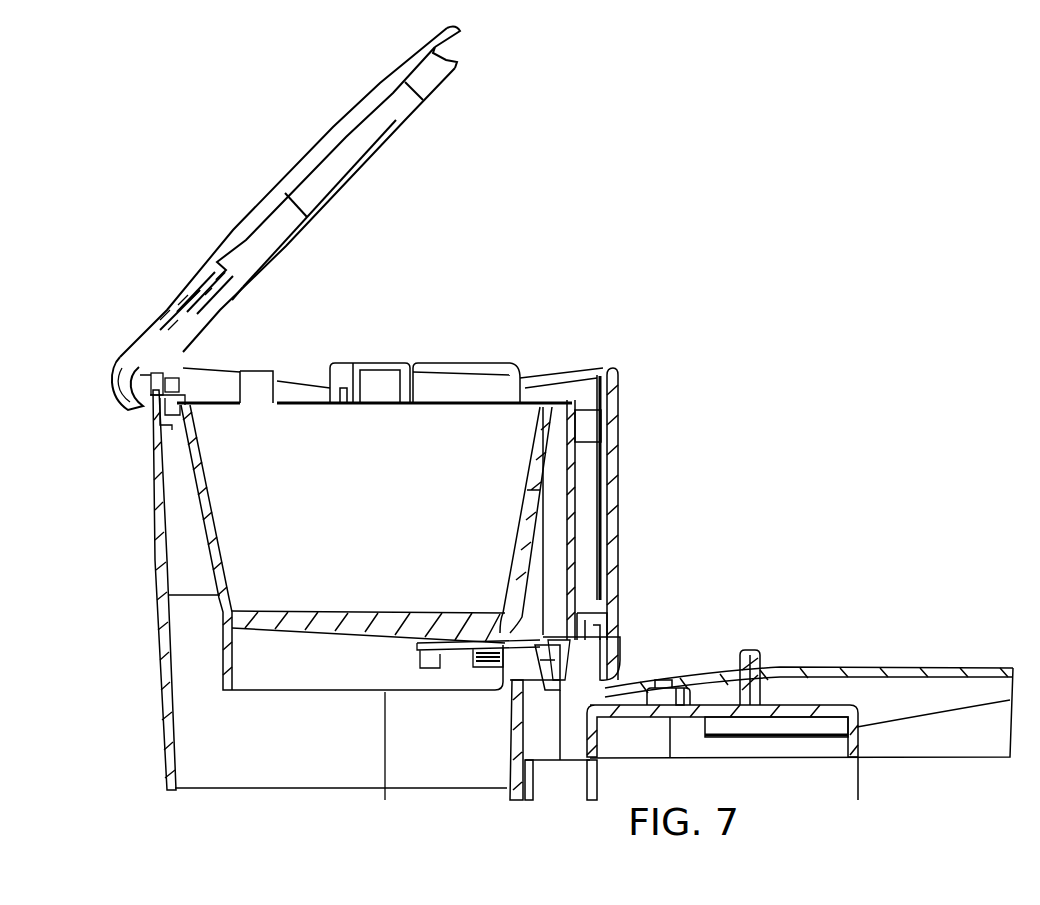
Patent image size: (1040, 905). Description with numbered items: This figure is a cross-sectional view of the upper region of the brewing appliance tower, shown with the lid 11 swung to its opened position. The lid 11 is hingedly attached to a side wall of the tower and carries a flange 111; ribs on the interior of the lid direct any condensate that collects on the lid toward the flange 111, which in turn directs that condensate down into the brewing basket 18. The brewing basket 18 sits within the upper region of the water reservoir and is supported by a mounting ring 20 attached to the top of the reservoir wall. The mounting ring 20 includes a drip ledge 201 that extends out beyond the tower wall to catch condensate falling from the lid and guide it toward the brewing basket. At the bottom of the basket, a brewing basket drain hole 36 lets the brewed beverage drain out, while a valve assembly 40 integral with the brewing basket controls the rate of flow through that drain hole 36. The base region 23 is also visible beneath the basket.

The lid 11 is at (347, 116).
The flange 111 is at (172, 360).
The drip ledge 201 is at (115, 398).
The mounting ring 20 is at (165, 416).
The brewing basket 18 is at (195, 508).
The brewing basket drain hole 36 is at (557, 635).
The valve assembly 40 is at (478, 680).
The base plate 23 is at (873, 668).